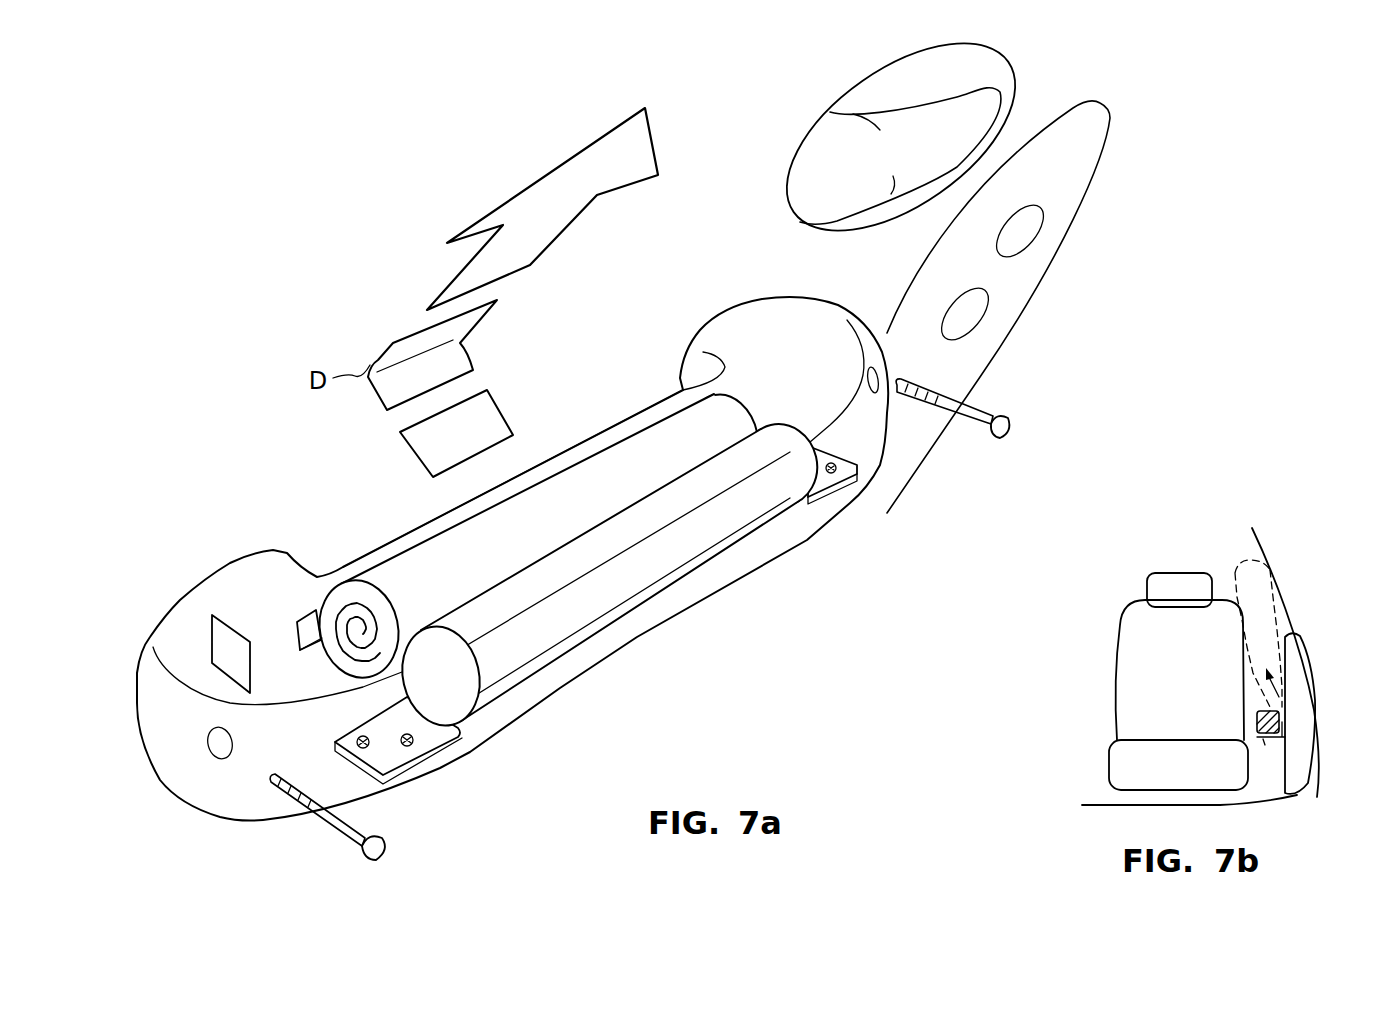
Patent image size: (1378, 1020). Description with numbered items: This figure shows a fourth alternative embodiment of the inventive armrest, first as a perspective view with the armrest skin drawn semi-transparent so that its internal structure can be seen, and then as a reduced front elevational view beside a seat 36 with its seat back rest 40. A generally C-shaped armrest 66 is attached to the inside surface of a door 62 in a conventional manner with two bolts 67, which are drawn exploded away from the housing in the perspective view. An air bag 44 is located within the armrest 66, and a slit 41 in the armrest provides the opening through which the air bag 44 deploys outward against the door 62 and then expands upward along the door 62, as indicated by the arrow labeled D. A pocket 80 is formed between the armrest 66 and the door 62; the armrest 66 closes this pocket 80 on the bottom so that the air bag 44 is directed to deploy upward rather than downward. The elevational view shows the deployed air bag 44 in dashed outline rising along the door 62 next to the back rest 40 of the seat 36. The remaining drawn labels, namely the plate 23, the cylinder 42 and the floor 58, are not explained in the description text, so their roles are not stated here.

In FIG. 7a, the label plate 23 is at (219, 664).
In FIG. 7b, the seat 36 is at (1127, 681).
In FIG. 7b, the seat back rest 40 is at (1163, 674).
In FIG. 7a, the slit 41 is at (307, 627).
In FIG. 7b, the slit 41 is at (1283, 733).
In FIG. 7a, the inflator 42 is at (623, 582).
In FIG. 7a, the air bag 44 is at (527, 522).
In FIG. 7b, the air bag 44 is at (1243, 563).
In FIG. 7b, the vehicle floor 58 is at (1097, 803).
In FIG. 7a, the door 62 is at (589, 322).
In FIG. 7b, the door 62 is at (1300, 655).
In FIG. 7a, the C-shaped armrest 66 is at (621, 676).
In FIG. 7b, the C-shaped armrest 66 is at (1265, 740).
In FIG. 7a, the bolts 67 is at (378, 834).
In FIG. 7a, the pocket 80 is at (596, 418).
In FIG. 7b, the pocket 80 is at (1280, 713).